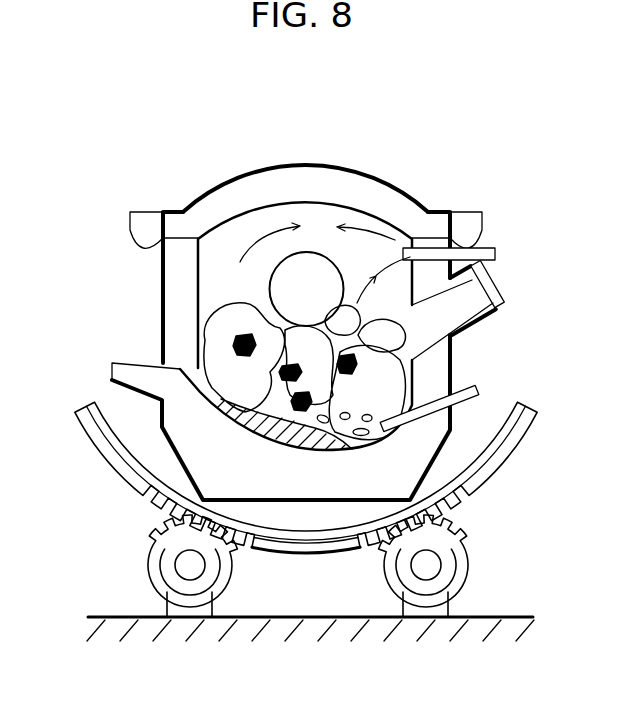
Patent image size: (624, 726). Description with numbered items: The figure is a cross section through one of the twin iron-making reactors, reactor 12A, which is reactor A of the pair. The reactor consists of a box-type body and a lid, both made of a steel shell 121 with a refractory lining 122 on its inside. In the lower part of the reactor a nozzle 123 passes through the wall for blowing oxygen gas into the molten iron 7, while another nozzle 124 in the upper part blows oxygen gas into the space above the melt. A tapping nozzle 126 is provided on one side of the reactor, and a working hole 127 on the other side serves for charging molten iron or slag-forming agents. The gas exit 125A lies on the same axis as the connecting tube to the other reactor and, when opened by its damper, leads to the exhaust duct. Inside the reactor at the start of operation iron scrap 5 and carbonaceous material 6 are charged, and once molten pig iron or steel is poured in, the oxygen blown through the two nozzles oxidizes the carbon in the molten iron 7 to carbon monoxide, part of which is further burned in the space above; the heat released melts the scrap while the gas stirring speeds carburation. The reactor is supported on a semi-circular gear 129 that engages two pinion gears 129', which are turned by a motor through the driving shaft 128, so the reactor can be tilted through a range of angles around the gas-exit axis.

The reactor A is at (306, 101).
The reactor 12A is at (373, 148).
The steel shell 121 is at (247, 181).
The refractory lining 122 is at (208, 190).
The nozzle 123 is at (477, 390).
The nozzle 124 is at (470, 257).
The gas exit 125A is at (295, 288).
The tapping nozzle 126 is at (180, 357).
The working hole 127 is at (470, 295).
The driving shaft 128 is at (191, 567).
The semi-circular gear 129 is at (286, 477).
The pinion gear 129' is at (245, 583).
The iron scrap 5 is at (220, 385).
The carbonaceous material 6 is at (240, 335).
The molten iron 7 is at (287, 440).